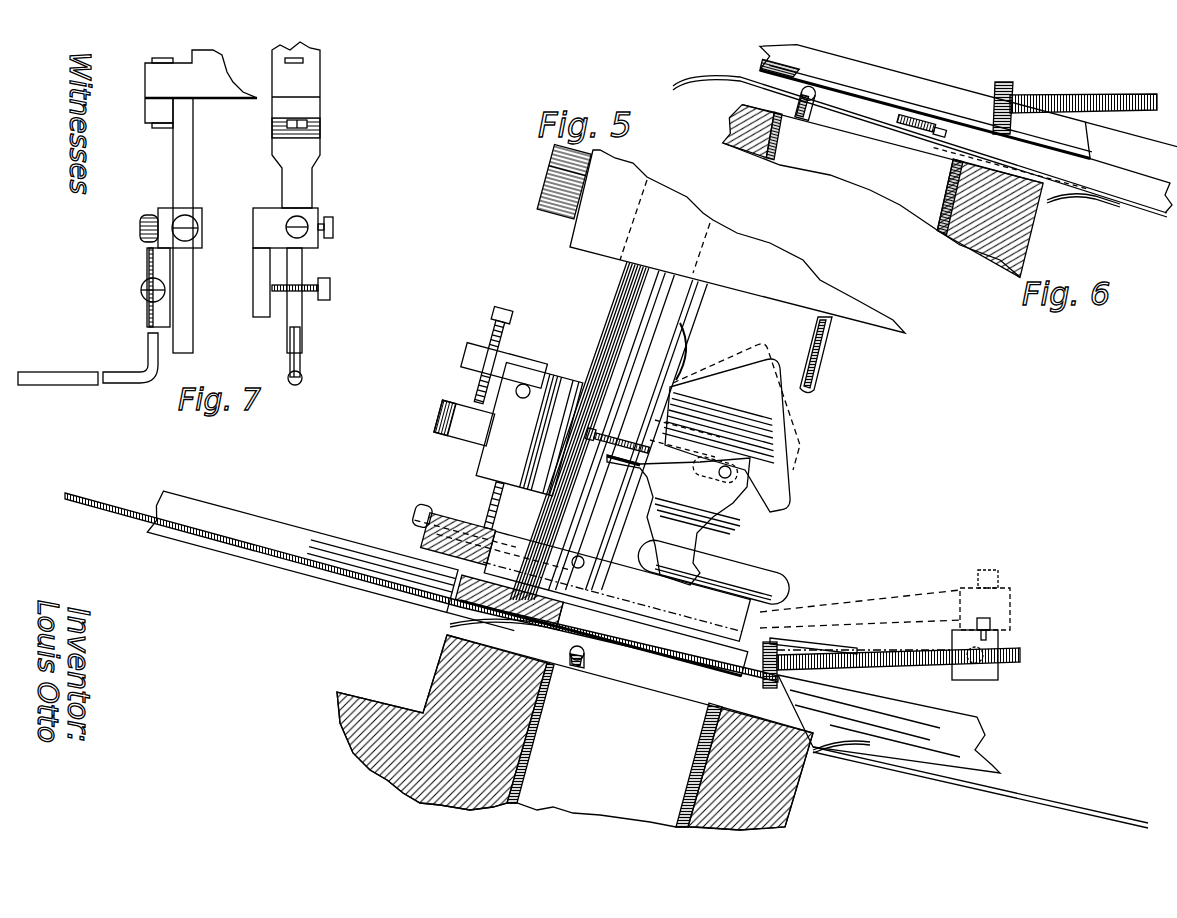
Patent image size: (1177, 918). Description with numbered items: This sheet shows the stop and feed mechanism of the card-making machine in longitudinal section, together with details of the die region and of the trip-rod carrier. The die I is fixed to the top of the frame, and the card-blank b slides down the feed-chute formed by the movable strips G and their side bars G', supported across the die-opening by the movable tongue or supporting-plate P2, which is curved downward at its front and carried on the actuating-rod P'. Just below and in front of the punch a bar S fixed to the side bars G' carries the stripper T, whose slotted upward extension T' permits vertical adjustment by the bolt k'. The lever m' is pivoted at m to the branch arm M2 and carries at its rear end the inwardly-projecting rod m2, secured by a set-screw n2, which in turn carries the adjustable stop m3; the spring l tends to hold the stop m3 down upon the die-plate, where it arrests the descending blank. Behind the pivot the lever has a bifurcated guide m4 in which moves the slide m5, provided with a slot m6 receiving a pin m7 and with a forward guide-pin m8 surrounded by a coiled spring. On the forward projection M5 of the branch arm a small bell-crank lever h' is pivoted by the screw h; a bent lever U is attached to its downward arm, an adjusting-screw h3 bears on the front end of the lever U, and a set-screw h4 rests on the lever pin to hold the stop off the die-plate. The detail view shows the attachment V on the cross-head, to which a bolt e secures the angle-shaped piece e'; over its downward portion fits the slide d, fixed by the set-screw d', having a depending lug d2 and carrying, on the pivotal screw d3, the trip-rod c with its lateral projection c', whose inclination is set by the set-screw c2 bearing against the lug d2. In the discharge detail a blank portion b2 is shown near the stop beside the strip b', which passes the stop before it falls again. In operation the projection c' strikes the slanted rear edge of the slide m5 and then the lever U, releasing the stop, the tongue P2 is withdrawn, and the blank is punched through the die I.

In FIG. 5, the branch arm M2 is at (707, 372).
In FIG. 5, the forward projection M5 is at (529, 428).
In FIG. 5, the bent lever U is at (443, 412).
In FIG. 5, the adjusting-screw h3 is at (512, 314).
In FIG. 5, the small bell-crank lever h' is at (508, 359).
In FIG. 5, the pivotal screw h is at (535, 392).
In FIG. 5, the set-screw h4 is at (487, 500).
In FIG. 5, the guide-pin m8 is at (596, 435).
In FIG. 5, the slide m5 is at (731, 428).
In FIG. 5, the slot m6 is at (735, 473).
In FIG. 5, the pin m7 is at (733, 495).
In FIG. 5, the bifurcated guide m4 is at (697, 524).
In FIG. 5, the lever m' is at (617, 583).
In FIG. 5, the pivot m is at (580, 544).
In FIG. 5, the slotted upward extension T' is at (477, 550).
In FIG. 5, the bar S is at (430, 530).
In FIG. 5, the bolt k' is at (406, 528).
In FIG. 5, the side bars G' is at (573, 637).
In FIG. 6, the side bars G' is at (1126, 167).
In FIG. 5, the card-blank b is at (421, 587).
In FIG. 6, the card-blank b is at (920, 146).
In FIG. 5, the stripper T is at (606, 617).
In FIG. 6, the stripper T is at (926, 97).
In FIG. 5, the actuating-rod P' is at (589, 679).
In FIG. 6, the actuating-rod P' is at (802, 124).
In FIG. 5, the supporting-plate P2 is at (692, 678).
In FIG. 6, the supporting-plate P2 is at (872, 120).
In FIG. 5, the die I is at (720, 767).
In FIG. 6, the die I is at (950, 205).
In FIG. 5, the small strip b' is at (928, 752).
In FIG. 6, the small strip b' is at (1136, 187).
In FIG. 5, the trip-rod c is at (820, 355).
In FIG. 7, the trip-rod c is at (221, 355).
In FIG. 5, the lateral projection c' is at (832, 390).
In FIG. 7, the lateral projection c' is at (185, 372).
In FIG. 5, the spring l is at (793, 647).
In FIG. 5, the set-screw n2 is at (995, 622).
In FIG. 5, the rod m2 is at (998, 672).
In FIG. 5, the stop m3 is at (891, 668).
In FIG. 6, the stop m3 is at (1052, 100).
In FIG. 6, the rod stop b2 is at (918, 133).
In FIG. 6, the movable strips G is at (1083, 213).
In FIG. 7, the bolt e is at (243, 123).
In FIG. 7, the attachment V is at (275, 75).
In FIG. 7, the angle-shaped piece e' is at (266, 225).
In FIG. 7, the slide d is at (244, 213).
In FIG. 7, the pivotal screw d3 is at (287, 220).
In FIG. 7, the set-screw d' is at (285, 232).
In FIG. 7, the lug d2 is at (262, 295).
In FIG. 7, the set-screw c2 is at (348, 287).